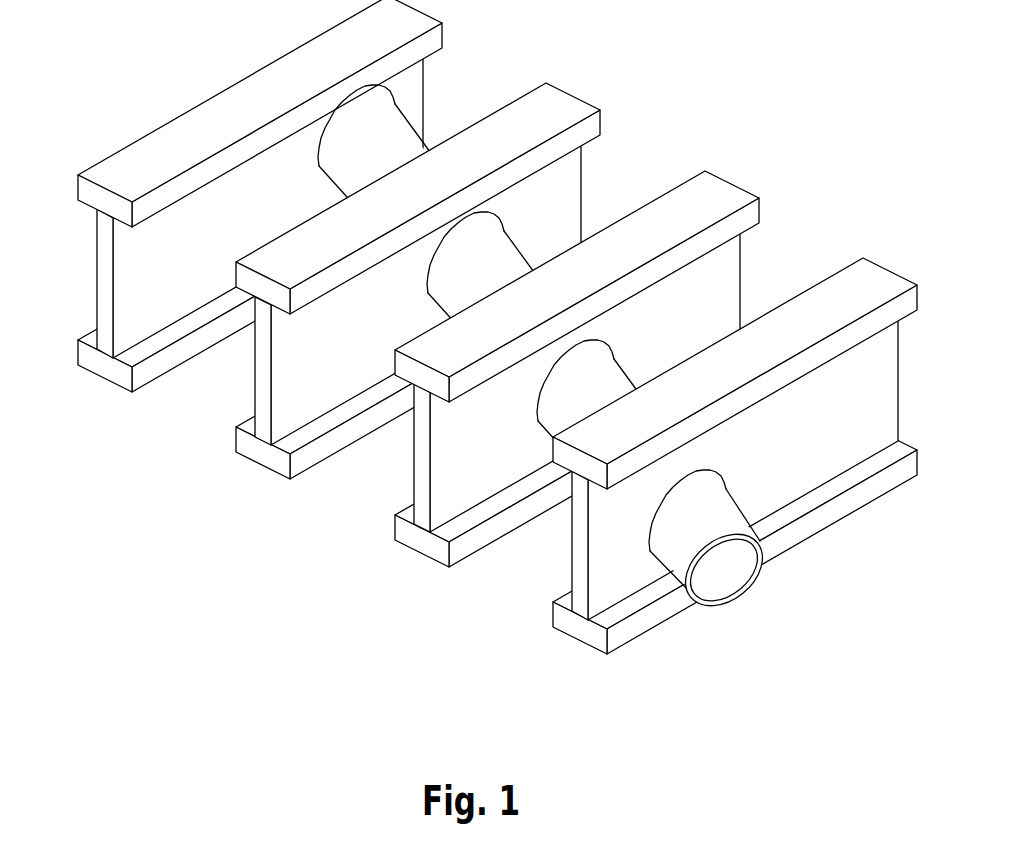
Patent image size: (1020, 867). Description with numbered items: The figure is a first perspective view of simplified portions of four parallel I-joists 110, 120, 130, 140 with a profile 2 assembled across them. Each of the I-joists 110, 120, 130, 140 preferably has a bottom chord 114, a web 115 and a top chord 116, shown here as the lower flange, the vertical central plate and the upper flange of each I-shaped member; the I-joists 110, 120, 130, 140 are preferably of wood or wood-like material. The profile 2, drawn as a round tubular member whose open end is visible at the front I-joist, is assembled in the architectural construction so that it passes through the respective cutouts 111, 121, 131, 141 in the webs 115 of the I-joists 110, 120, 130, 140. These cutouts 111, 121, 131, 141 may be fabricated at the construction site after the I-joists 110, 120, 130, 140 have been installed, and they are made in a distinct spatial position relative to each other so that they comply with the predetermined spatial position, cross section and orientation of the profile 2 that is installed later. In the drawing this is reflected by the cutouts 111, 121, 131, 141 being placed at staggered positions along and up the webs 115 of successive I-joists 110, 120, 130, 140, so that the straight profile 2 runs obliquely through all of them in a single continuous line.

The profile 2 is at (779, 549).
The I-joist 110 is at (667, 482).
The cutout 111 is at (713, 482).
The bottom chord 114 is at (561, 628).
The web 115 is at (580, 543).
The top chord 116 is at (567, 457).
The I-joist 120 is at (573, 395).
The cutout 121 is at (608, 353).
The I-joist 130 is at (428, 304).
The cutout 131 is at (499, 229).
The I-joist 140 is at (272, 223).
The cutout 141 is at (390, 90).